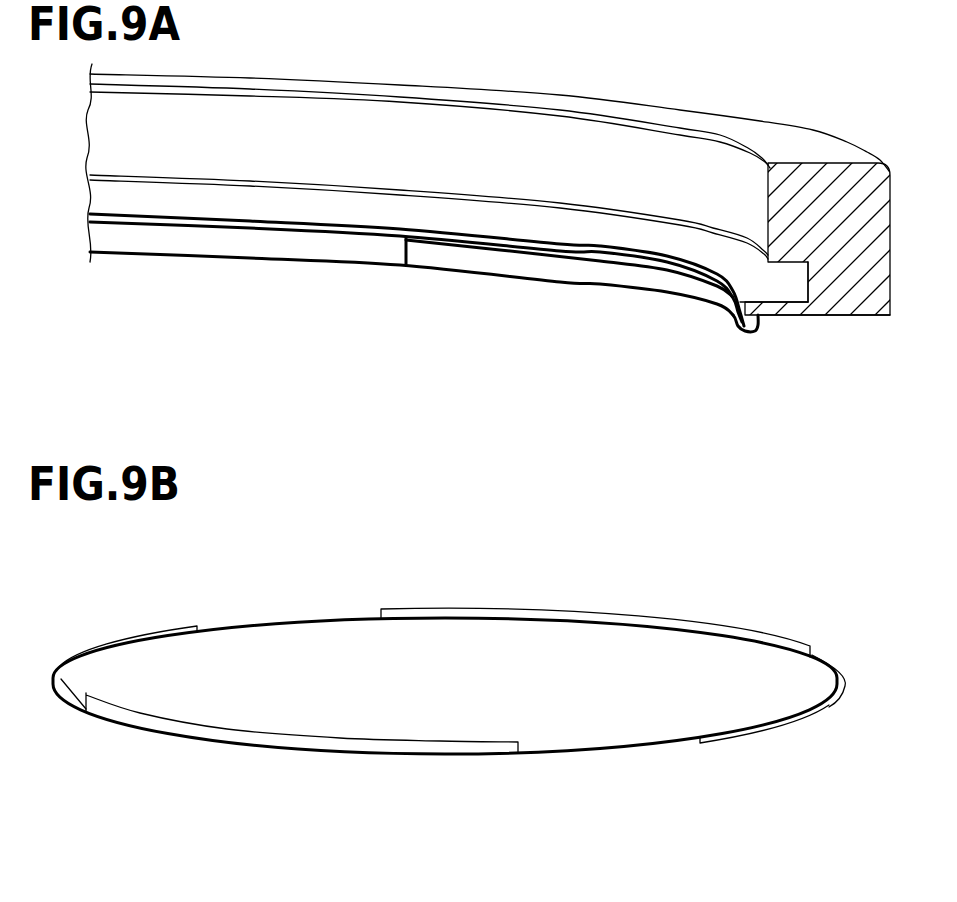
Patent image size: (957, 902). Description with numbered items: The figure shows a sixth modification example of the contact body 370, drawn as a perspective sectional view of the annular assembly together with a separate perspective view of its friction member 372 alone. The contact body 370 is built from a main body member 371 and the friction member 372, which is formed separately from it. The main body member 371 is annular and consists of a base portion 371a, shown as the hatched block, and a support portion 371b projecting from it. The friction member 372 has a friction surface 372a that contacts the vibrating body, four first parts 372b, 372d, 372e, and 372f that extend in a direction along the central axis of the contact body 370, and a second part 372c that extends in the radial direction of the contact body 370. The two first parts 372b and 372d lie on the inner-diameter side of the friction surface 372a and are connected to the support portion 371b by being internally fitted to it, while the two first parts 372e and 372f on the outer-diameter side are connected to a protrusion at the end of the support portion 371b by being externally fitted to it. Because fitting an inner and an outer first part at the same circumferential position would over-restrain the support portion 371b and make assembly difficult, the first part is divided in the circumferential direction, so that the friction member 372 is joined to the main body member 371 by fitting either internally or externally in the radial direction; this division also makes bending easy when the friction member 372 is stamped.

In FIG. 9A, the contact body 370 is at (523, 329).
In FIG. 9A, the main body member 371 is at (783, 309).
In FIG. 9A, the base portion 371a is at (851, 306).
In FIG. 9A, the support portion 371b is at (898, 417).
In FIG. 9A, the friction member 372 is at (424, 341).
In FIG. 9B, the friction member 372 is at (317, 550).
In FIG. 9A, the friction surface 372a is at (741, 336).
In FIG. 9A, the first part 372b is at (409, 250).
In FIG. 9B, the first part 372b is at (590, 609).
In FIG. 9A, the second part 372c is at (737, 318).
In FIG. 9B, the second part 372c is at (835, 676).
In FIG. 9B, the first part 372d is at (230, 736).
In FIG. 9A, the first part 372e is at (710, 298).
In FIG. 9B, the first part 372e is at (133, 633).
In FIG. 9B, the first part 372f is at (752, 740).